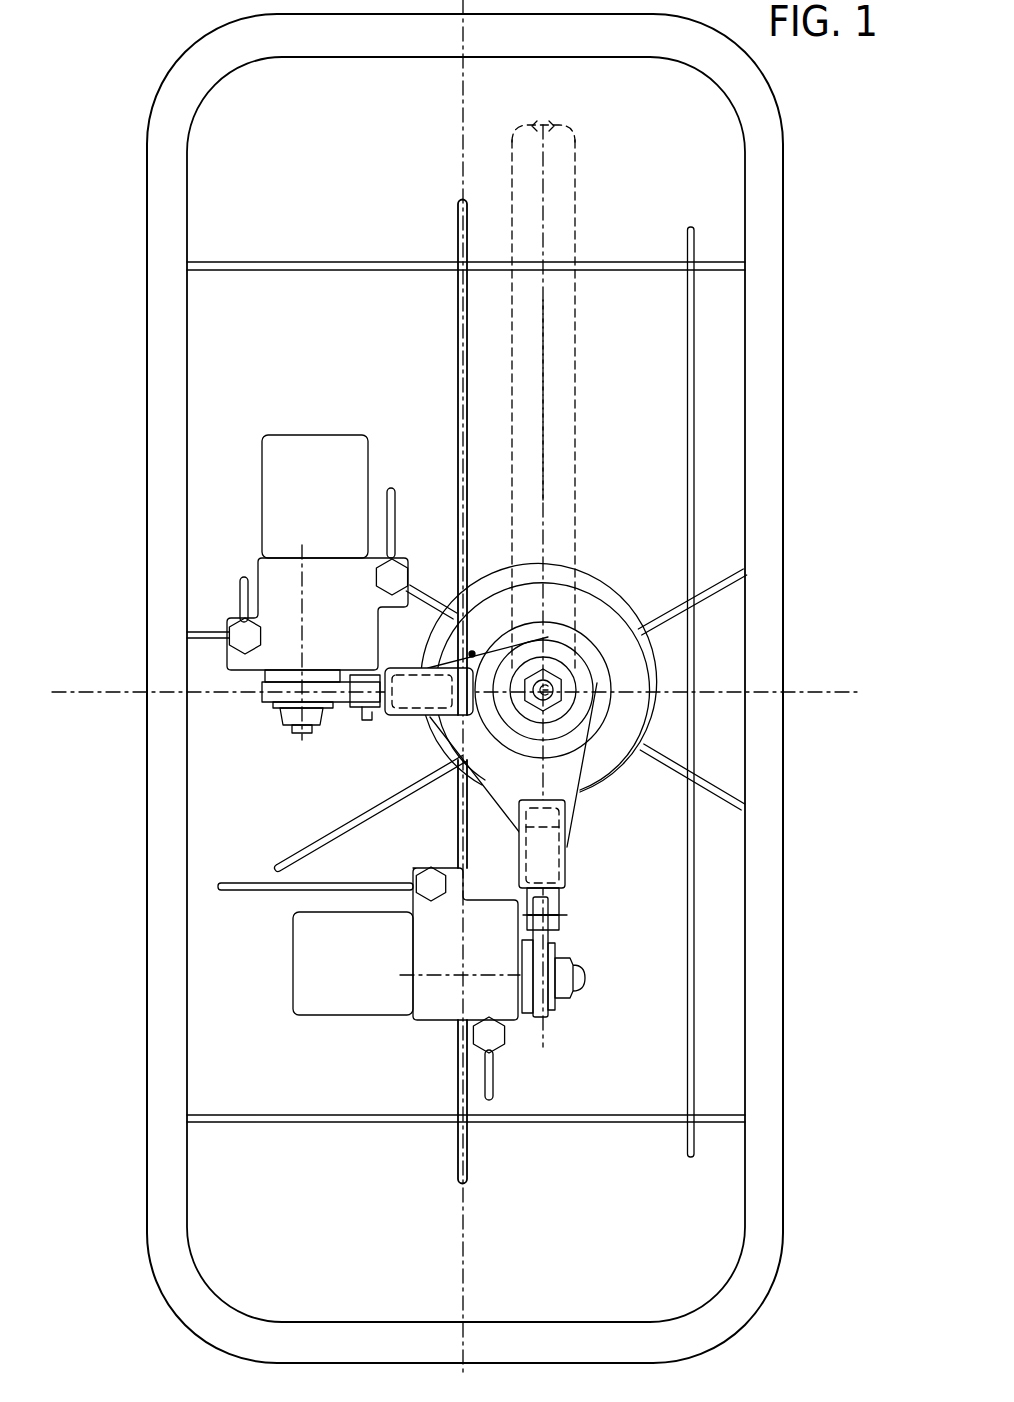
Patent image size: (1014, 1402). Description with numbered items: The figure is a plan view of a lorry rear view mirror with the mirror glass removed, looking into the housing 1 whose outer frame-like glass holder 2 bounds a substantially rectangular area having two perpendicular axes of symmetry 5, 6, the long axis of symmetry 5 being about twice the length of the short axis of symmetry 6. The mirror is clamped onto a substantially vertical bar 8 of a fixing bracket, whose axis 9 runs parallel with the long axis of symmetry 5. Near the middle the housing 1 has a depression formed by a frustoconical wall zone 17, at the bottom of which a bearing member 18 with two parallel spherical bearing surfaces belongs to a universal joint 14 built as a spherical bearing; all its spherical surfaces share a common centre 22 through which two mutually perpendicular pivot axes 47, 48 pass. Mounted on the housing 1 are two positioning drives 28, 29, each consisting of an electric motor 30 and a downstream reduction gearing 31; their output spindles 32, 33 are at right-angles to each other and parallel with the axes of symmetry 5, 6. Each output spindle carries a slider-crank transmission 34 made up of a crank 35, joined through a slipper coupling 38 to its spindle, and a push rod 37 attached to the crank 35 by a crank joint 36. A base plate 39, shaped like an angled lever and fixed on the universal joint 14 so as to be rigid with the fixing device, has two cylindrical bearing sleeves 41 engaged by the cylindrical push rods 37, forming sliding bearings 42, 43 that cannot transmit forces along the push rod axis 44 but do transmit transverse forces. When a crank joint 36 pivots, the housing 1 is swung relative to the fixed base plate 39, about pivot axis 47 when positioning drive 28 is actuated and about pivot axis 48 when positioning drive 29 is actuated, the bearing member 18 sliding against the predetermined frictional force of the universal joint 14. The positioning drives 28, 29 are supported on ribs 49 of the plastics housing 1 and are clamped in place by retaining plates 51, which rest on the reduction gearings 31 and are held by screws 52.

The housing 1 is at (790, 226).
The glass holder 2 is at (767, 270).
The axis of symmetry 5 is at (461, 137).
The axis of symmetry 6 is at (697, 695).
The bar 8 is at (577, 307).
The axis 9 is at (546, 183).
The universal joint 14 is at (621, 791).
The frustoconical wall zone 17 is at (596, 588).
The bearing member 18 is at (588, 653).
The spherical centre 22 is at (550, 687).
The positioning drive 28 is at (376, 484).
The positioning drive 29 is at (319, 1027).
The electric motor 30 is at (328, 484).
The reduction gearing 31 is at (350, 628).
The output spindle 32 is at (263, 678).
The output spindle 33 is at (536, 1020).
The slider-crank transmission 34 is at (277, 733).
The crank 35 is at (343, 704).
The crank joint 36 is at (366, 713).
The push rod 37 is at (392, 673).
The slipper coupling 38 is at (278, 700).
The base plate 39 is at (508, 762).
The bearing sleeve 41 is at (415, 665).
The sliding bearing 42 is at (473, 650).
The sliding bearing 43 is at (568, 860).
The axis 44 is at (422, 705).
The pivot axis 47 is at (544, 418).
The pivot axis 48 is at (580, 712).
The rib 49 is at (687, 366).
The retaining plate 51 is at (287, 556).
The screw 52 is at (240, 630).